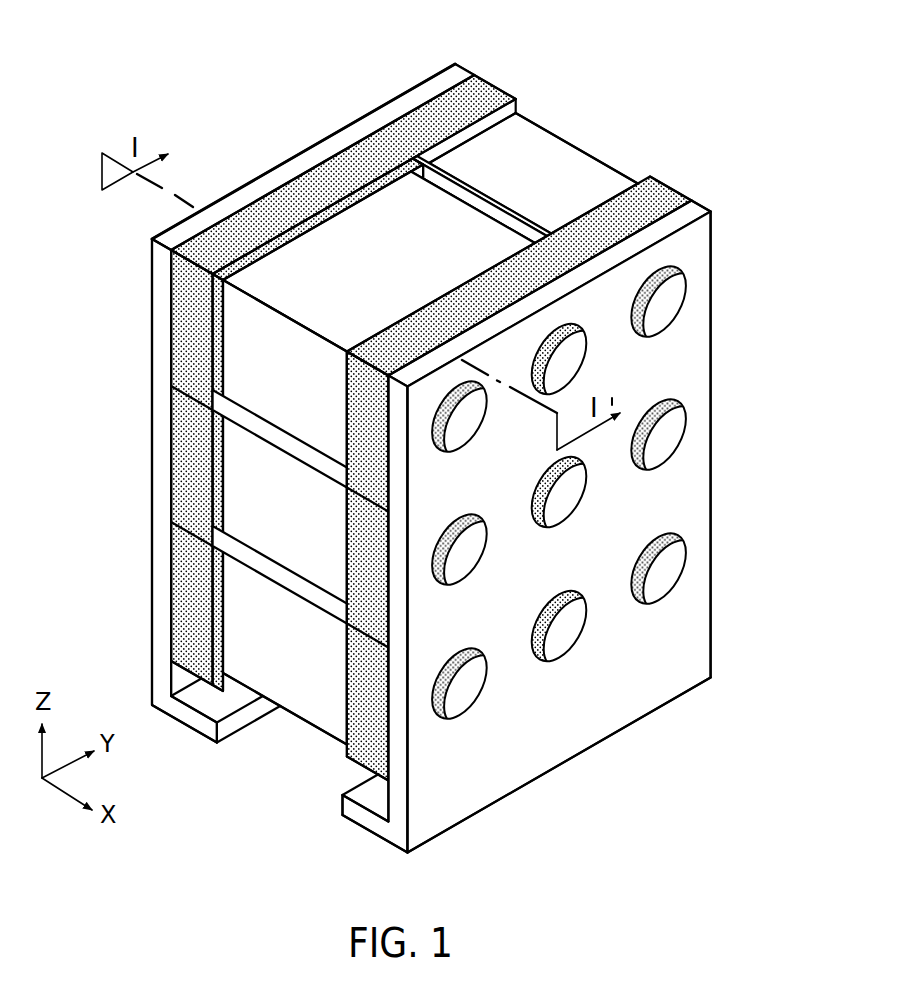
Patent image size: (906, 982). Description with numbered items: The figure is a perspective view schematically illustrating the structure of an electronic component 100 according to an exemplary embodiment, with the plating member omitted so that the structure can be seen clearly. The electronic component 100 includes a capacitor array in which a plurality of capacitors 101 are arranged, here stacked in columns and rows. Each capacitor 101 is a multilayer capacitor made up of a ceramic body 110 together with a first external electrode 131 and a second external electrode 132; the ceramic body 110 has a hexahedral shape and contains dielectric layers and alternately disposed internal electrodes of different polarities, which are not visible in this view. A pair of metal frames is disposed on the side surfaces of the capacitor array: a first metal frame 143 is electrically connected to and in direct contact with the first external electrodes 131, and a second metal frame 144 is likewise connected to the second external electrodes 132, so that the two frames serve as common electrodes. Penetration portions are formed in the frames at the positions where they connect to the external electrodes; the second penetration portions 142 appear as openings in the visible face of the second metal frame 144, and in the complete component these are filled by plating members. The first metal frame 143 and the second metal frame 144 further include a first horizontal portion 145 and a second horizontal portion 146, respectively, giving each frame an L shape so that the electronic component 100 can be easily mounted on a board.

The electronic component 100 is at (145, 48).
The capacitor 101 is at (345, 50).
The ceramic body 110 is at (291, 270).
The first external electrode 131 is at (231, 236).
The second external electrode 132 is at (366, 345).
The second penetration portion 142 is at (686, 300).
The first metal frame 143 is at (165, 280).
The second metal frame 144 is at (698, 249).
The first horizontal portion 145 is at (207, 735).
The second horizontal portion 146 is at (372, 822).